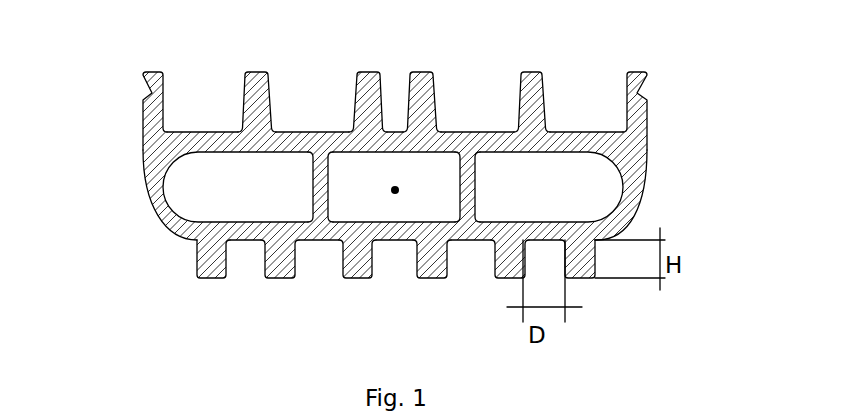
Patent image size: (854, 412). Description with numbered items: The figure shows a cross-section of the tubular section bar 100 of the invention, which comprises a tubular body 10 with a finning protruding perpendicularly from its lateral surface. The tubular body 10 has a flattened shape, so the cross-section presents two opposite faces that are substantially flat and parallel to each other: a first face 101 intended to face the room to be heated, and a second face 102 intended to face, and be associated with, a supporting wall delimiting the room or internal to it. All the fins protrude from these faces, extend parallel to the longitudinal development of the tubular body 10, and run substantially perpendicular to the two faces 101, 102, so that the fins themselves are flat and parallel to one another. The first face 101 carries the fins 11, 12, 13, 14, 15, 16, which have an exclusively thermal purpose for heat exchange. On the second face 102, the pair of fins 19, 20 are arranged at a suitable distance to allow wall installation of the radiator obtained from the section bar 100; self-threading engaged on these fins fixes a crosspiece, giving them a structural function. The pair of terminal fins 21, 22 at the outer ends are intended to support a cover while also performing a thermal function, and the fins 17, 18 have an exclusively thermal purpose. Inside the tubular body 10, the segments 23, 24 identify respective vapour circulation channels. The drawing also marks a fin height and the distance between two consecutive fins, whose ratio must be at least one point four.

The tubular body 10 is at (160, 198).
The fin 11 is at (207, 258).
The fin 12 is at (278, 272).
The fin 13 is at (376, 270).
The fin 14 is at (430, 278).
The fin 15 is at (510, 273).
The fin 16 is at (582, 273).
The fin 17 is at (242, 78).
The fin 18 is at (520, 94).
The fin 19 is at (361, 87).
The fin 20 is at (424, 79).
The terminal fin 21 is at (144, 128).
The terminal fin 22 is at (647, 130).
The segment 23 is at (467, 190).
The segment 24 is at (332, 203).
The tubular section bar 100 is at (668, 196).
The first face 101 is at (131, 334).
The second face 102 is at (148, 44).